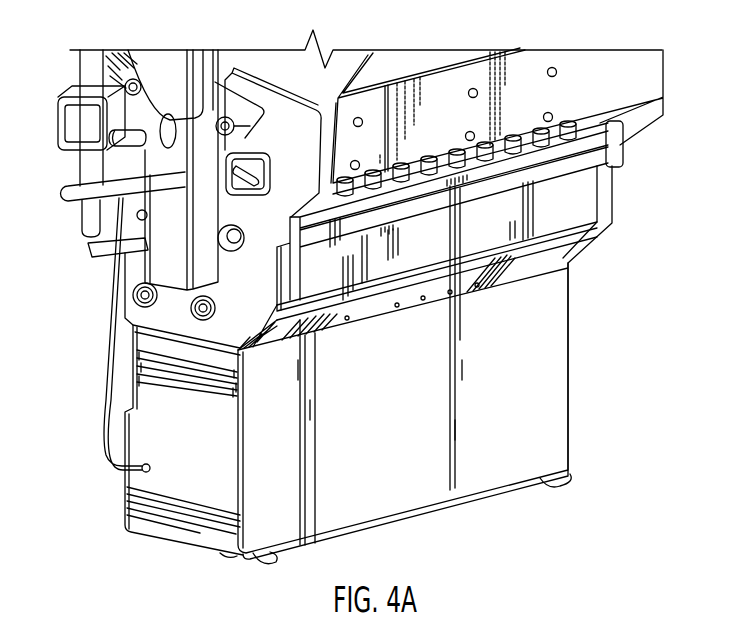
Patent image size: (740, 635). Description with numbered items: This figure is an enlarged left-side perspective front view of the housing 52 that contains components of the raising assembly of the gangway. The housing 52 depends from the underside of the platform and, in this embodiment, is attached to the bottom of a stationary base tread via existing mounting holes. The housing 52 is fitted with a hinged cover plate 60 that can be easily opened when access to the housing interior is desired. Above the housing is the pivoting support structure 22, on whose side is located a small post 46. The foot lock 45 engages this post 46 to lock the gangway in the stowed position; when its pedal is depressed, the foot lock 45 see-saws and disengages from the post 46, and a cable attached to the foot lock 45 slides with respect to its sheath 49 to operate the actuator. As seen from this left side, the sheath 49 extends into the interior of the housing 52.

The support structure 22 is at (612, 77).
The foot lock 45 is at (232, 100).
The post 46 is at (216, 130).
The sheath 49 is at (102, 411).
The housing 52 is at (145, 515).
The hinged cover plate 60 is at (430, 478).